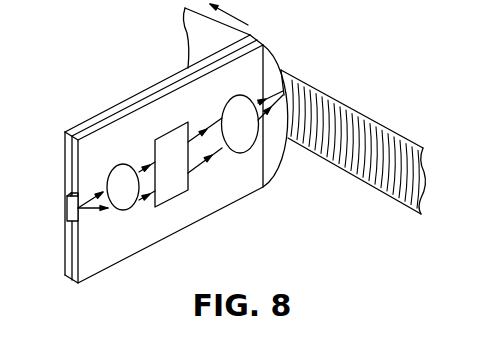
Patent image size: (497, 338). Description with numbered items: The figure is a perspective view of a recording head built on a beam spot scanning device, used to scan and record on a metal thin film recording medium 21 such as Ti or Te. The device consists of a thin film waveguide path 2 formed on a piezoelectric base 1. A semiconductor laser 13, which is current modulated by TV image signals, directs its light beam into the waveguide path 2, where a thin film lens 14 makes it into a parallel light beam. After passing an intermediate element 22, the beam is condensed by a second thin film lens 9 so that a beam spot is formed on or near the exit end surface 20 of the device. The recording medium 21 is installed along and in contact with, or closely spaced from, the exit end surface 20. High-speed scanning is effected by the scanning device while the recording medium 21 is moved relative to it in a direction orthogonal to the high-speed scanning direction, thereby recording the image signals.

The piezoelectric base 1 is at (67, 277).
The thin film waveguide path 2 is at (78, 163).
The semiconductor laser 13 is at (67, 213).
The thin film lens 14 is at (127, 209).
The aperture plate 22 is at (176, 193).
The thin film lens 9 is at (247, 149).
The exit end surface 20 is at (283, 69).
The metal thin film recording medium 21 is at (385, 132).